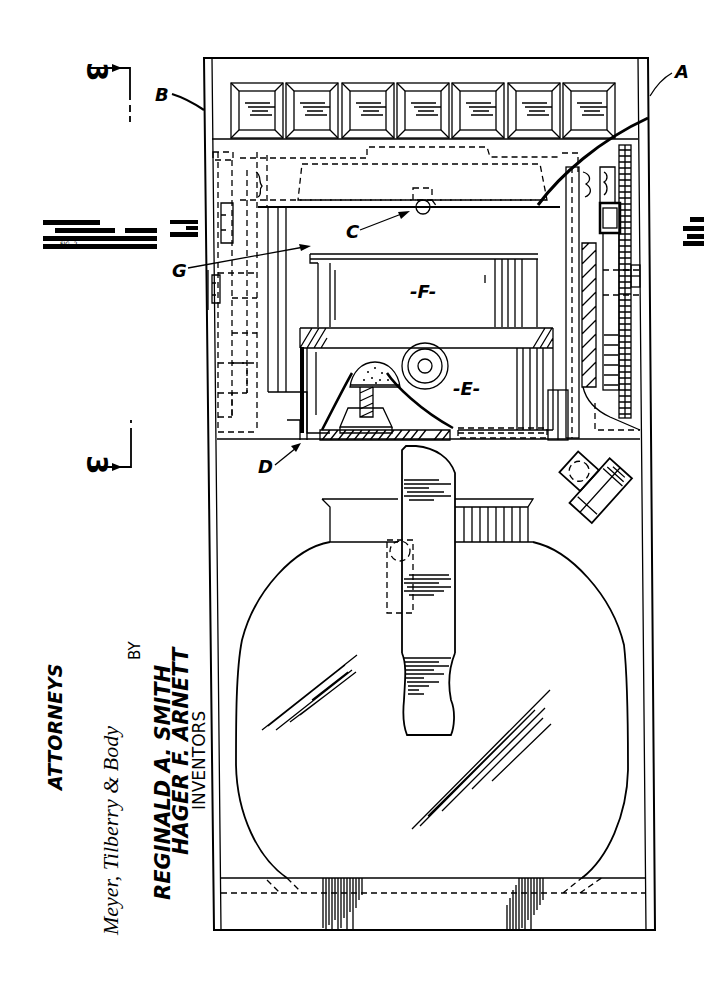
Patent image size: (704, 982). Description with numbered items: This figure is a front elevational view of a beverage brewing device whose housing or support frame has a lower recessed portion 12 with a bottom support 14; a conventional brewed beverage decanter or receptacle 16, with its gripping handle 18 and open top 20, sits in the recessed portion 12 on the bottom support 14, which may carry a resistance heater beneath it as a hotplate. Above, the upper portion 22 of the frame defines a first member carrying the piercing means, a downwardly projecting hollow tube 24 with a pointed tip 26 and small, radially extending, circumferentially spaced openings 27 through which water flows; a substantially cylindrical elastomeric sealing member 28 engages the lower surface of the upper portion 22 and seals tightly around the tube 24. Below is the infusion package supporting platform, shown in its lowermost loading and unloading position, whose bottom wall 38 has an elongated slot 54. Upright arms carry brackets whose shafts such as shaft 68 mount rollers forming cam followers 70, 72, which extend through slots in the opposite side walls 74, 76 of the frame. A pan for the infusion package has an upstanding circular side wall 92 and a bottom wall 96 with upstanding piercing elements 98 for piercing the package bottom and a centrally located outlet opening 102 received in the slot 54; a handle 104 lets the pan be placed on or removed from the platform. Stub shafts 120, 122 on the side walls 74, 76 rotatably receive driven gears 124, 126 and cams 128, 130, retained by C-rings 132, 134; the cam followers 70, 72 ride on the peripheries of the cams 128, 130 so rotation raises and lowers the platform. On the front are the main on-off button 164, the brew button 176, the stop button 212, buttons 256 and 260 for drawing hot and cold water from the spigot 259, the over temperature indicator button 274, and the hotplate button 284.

The lower recessed portion 12 is at (218, 528).
The bottom support 14 is at (585, 878).
The brewed beverage decanter or receptacle 16 is at (276, 604).
The gripping handle 18 is at (460, 663).
The open top 20 is at (490, 498).
The upper portion 22 is at (213, 157).
The hollow tube 24 is at (440, 210).
The pointed tip 26 is at (424, 212).
The openings 27 is at (415, 185).
The elastomeric sealing member 28 is at (373, 178).
The bottom wall 38 is at (337, 441).
The elongated slot 54 is at (448, 433).
The shaft 68 is at (598, 192).
The cam follower 70 is at (218, 188).
The cam follower 72 is at (633, 189).
The side wall 74 is at (275, 248).
The side wall 76 is at (572, 250).
The upstanding circular side wall 92 is at (307, 368).
The bottom wall 96 is at (401, 441).
The piercing elements 98 is at (358, 370).
The outlet opening 102 is at (430, 441).
The handle 104 is at (432, 347).
The stub shaft 120 is at (212, 290).
The stub shaft 122 is at (641, 292).
The driven gear 124 is at (223, 393).
The driven gear 126 is at (633, 394).
The cam 128 is at (243, 368).
The cam 130 is at (616, 353).
The C-ring 132 is at (212, 307).
The C-ring 134 is at (641, 272).
The main on-off button 164 is at (256, 98).
The brew button 176 is at (366, 98).
The stop button 212 is at (423, 98).
The button 256 is at (476, 98).
The spigot 259 is at (624, 516).
The button 260 is at (533, 98).
The over temperature indicator button 274 is at (588, 98).
The button 284 is at (311, 98).